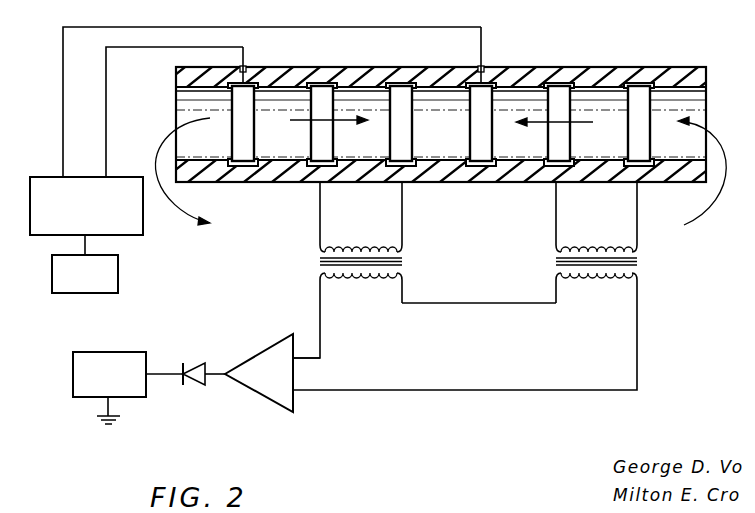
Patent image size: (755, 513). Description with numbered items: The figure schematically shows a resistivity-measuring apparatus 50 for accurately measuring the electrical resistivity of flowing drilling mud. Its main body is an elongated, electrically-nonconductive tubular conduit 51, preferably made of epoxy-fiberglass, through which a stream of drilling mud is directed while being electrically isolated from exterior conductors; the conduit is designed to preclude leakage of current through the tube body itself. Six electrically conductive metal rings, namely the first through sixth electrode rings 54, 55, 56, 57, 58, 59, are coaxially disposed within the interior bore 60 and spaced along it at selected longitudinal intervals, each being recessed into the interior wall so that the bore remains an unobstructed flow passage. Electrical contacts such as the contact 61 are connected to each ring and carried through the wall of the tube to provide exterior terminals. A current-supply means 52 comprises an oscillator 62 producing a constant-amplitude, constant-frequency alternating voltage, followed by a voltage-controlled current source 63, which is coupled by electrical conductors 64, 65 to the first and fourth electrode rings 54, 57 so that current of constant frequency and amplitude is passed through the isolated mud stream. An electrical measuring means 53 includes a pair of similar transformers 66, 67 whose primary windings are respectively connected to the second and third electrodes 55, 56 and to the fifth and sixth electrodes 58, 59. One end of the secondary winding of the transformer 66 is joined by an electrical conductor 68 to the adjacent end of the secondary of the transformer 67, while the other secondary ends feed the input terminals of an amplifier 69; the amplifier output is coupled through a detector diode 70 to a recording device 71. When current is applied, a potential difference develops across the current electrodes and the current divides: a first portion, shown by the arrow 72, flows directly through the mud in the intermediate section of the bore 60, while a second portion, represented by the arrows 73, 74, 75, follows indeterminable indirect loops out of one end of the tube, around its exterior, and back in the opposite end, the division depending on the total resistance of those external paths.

The resistivity-measuring apparatus 50 is at (457, 102).
The tubular conduit 51 is at (681, 72).
The current-supply means 52 is at (150, 253).
The electrical measuring means 53 is at (418, 252).
The first electrode ring 54 is at (249, 141).
The second electrode ring 55 is at (328, 141).
The third electrode ring 56 is at (407, 141).
The fourth electrode ring 57 is at (487, 141).
The fifth electrode ring 58 is at (565, 141).
The sixth electrode ring 59 is at (645, 141).
The interior bore 60 is at (700, 93).
The electrical contact 61 is at (249, 78).
The oscillator 62 is at (60, 296).
The voltage-controlled current source 63 is at (36, 168).
The electrical conductor 64 is at (107, 110).
The electrical conductor 65 is at (64, 110).
The transformer 66 is at (318, 264).
The transformer 67 is at (640, 262).
The electrical conductor 68 is at (477, 305).
The amplifier 69 is at (269, 403).
The diode 70 is at (198, 386).
The recording device 71 is at (75, 398).
The arrow 72 is at (352, 120).
The arrow 73 is at (184, 212).
The arrow 74 is at (703, 218).
The arrow 75 is at (538, 121).